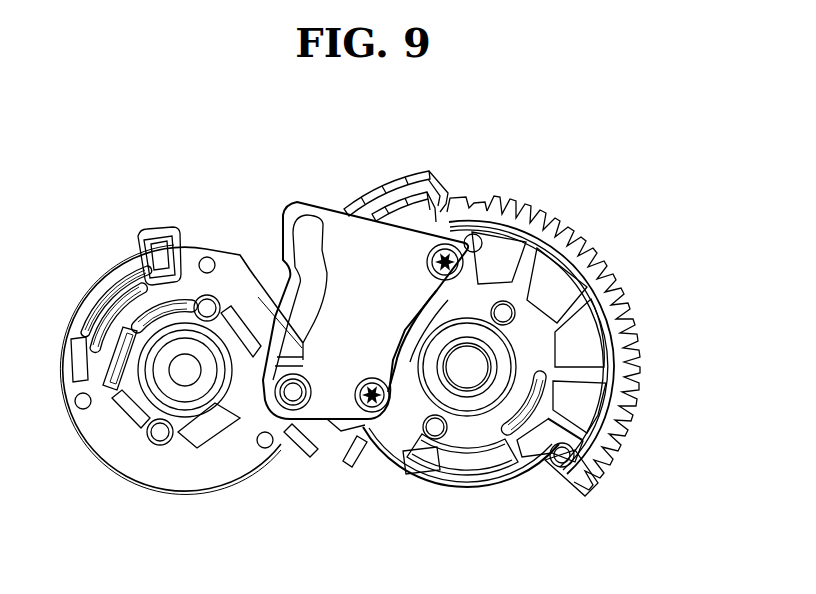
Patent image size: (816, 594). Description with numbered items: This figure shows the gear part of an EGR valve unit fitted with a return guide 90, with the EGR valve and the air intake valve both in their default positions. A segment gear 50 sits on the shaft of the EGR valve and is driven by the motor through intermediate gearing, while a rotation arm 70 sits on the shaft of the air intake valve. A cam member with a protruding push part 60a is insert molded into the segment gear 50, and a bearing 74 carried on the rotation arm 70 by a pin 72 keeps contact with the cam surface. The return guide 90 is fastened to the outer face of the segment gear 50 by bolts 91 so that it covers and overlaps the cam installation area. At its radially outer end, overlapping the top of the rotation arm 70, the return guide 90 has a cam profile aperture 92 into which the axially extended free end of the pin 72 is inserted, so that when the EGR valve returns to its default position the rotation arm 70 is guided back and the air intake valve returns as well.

The segment gear 50 is at (583, 340).
The push part 60a is at (383, 292).
The rotation arm 70 is at (133, 457).
The pin 72 is at (293, 401).
The bearing 74 is at (285, 404).
The return guide 90 is at (433, 200).
The bolts 91 is at (553, 237).
The cam profile aperture 92 is at (341, 290).